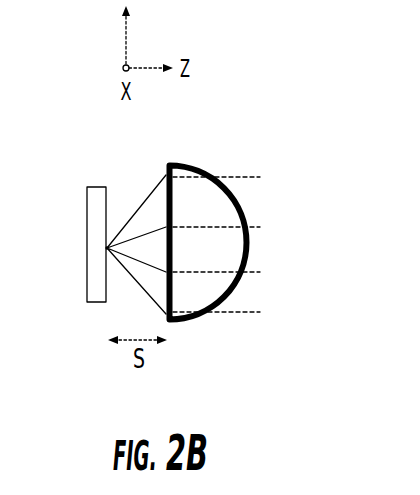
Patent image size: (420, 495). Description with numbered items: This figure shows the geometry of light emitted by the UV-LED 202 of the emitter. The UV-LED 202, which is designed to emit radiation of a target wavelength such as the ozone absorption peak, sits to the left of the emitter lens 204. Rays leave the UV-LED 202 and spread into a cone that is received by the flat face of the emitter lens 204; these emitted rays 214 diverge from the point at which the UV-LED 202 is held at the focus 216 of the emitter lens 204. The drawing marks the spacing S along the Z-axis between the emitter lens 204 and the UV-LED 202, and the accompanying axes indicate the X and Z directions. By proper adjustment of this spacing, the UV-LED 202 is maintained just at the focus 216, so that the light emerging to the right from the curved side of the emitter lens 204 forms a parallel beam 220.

The UV-LED 202 is at (91, 186).
The emitter lens 204 is at (190, 163).
The diverging light rays 214 is at (127, 192).
The focus 216 is at (116, 282).
The parallel beam 220 is at (243, 328).